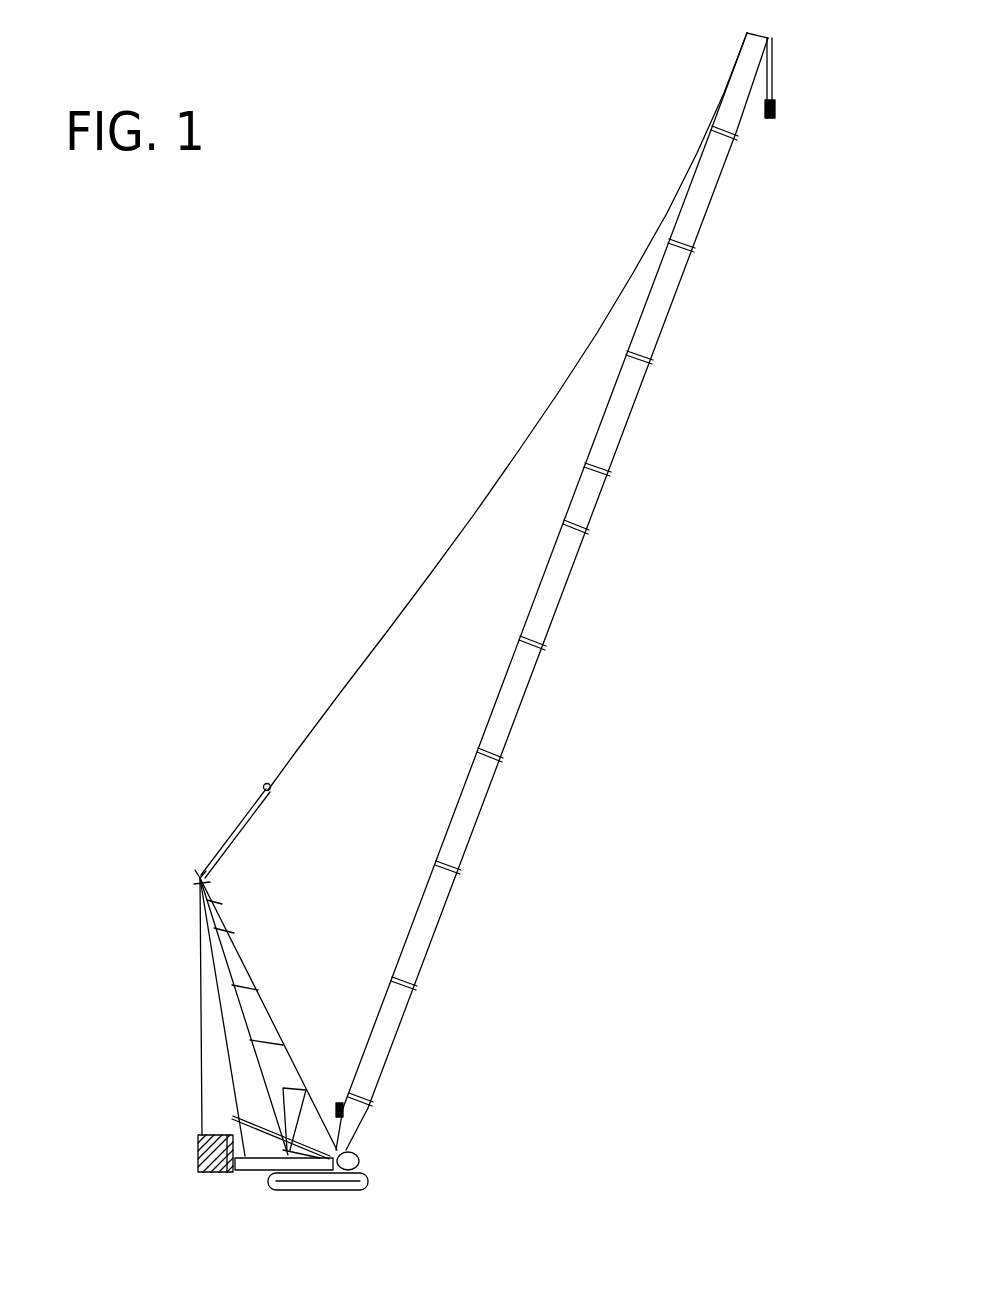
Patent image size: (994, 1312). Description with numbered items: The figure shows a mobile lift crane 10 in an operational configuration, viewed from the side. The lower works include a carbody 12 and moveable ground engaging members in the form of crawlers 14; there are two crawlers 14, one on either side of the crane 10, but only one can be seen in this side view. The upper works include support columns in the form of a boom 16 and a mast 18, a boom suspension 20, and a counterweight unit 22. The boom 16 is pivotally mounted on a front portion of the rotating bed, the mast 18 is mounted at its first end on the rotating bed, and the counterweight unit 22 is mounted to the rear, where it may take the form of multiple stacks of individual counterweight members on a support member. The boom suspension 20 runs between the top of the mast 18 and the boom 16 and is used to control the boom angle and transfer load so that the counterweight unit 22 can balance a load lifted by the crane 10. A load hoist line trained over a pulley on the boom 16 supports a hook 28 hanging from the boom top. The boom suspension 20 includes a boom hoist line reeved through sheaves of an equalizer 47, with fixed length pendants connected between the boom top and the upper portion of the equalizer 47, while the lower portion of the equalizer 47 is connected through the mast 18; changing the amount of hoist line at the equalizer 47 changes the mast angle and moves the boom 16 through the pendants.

The mobile lift crane 10 is at (483, 1145).
The carbody 12 is at (367, 1178).
The crawlers 14 is at (280, 1183).
The boom 16 is at (557, 603).
The mast 18 is at (213, 910).
The boom suspension 20 is at (482, 490).
The counterweight unit 22 is at (197, 1152).
The hook 28 is at (777, 118).
The equalizer 47 is at (229, 830).